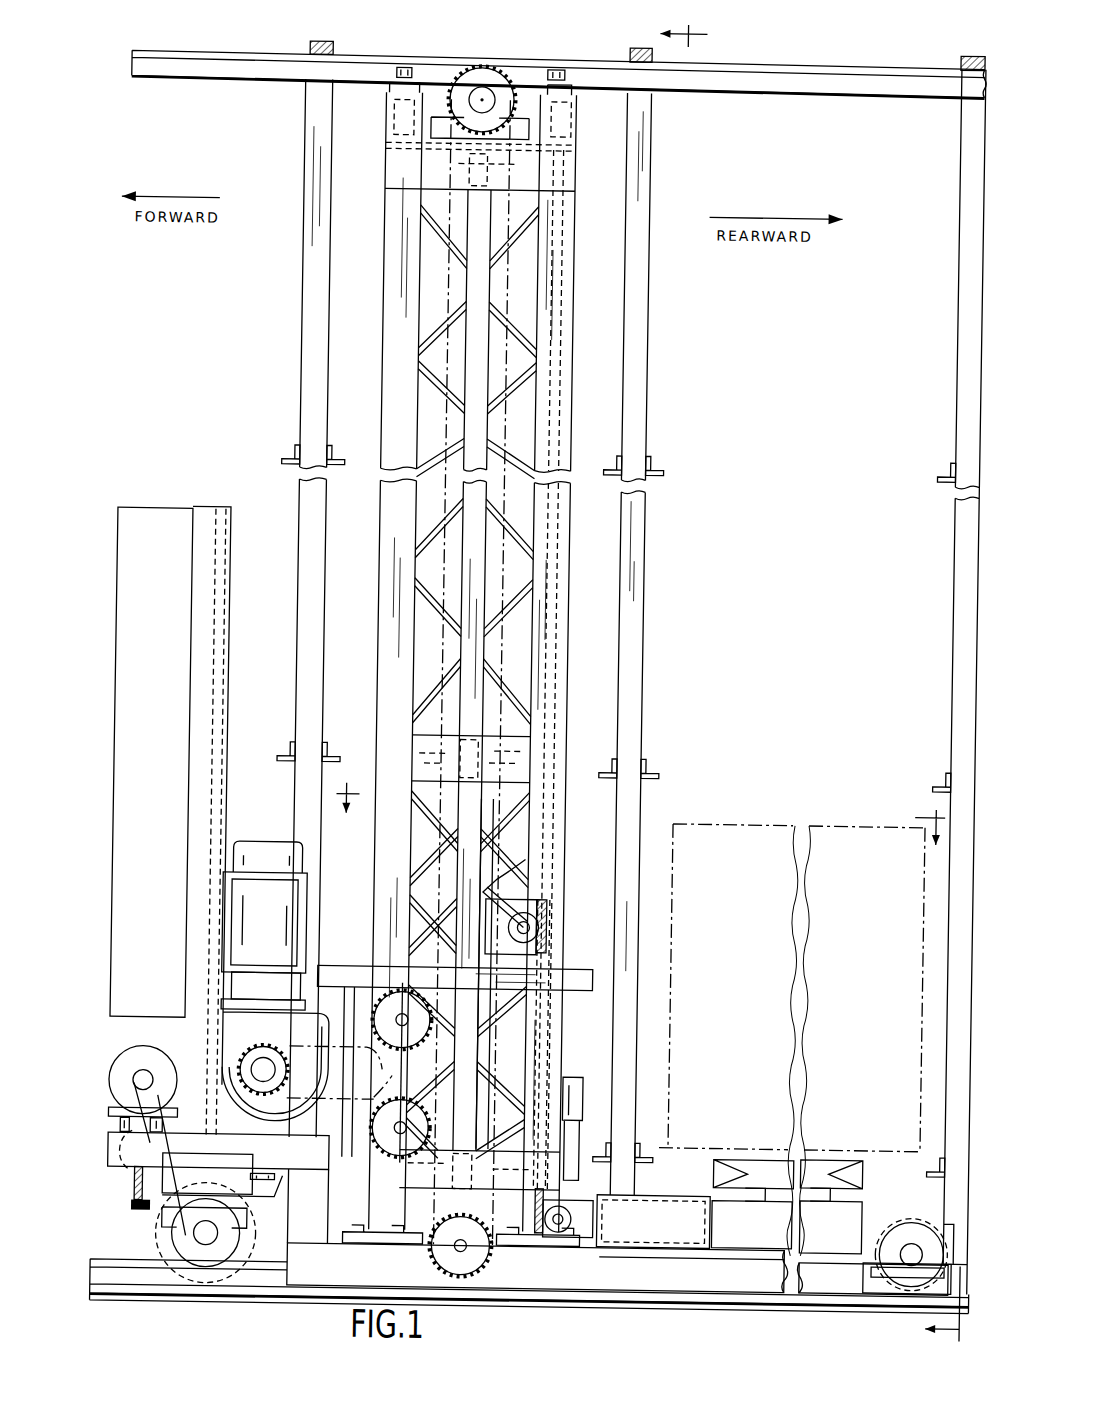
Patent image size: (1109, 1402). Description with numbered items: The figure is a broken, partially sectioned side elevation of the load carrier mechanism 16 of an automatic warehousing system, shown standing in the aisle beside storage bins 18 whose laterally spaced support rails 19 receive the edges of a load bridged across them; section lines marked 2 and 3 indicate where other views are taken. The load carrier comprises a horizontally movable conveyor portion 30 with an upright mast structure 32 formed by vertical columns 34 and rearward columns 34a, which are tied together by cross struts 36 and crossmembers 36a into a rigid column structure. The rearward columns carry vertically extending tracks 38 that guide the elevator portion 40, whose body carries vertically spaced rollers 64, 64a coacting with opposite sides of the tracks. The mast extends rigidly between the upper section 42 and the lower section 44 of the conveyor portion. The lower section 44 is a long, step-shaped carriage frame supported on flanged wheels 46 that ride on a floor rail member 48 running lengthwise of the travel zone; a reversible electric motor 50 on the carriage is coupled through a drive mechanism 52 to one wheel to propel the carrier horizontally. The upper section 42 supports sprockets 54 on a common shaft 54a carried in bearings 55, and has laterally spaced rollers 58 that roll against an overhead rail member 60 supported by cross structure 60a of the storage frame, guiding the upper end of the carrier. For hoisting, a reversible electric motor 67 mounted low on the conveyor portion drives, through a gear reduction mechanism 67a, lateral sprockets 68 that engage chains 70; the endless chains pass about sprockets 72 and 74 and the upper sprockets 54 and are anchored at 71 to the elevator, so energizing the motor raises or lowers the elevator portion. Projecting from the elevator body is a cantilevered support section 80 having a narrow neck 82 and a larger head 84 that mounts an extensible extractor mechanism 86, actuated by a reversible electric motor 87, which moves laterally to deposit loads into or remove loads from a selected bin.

The section line 2- 2 is at (801, 682).
The section line 3- 3 is at (640, 825).
The load carrier mechanism 16 is at (493, 662).
The storage bins 18 is at (308, 330).
The support rails 19 is at (290, 460).
The conveyor portion 30 is at (566, 830).
The mast structure 32 is at (567, 530).
The vertical columns 34 is at (396, 660).
The rearward columns 34a is at (568, 705).
The cross struts 36 is at (538, 400).
The crossmembers 36a is at (435, 198).
The tracks 38 is at (558, 930).
The elevator portion 40 is at (595, 1073).
The upper section 42 is at (568, 129).
The lower section 44 is at (317, 1272).
The flanged wheels 46 is at (234, 1272).
The rail member 48 is at (160, 1292).
The electric motor 50 is at (160, 1056).
The drive mechanism 52 is at (128, 1168).
The sprockets 54 is at (489, 75).
The common shaft 54a is at (469, 88).
The bearings 55 is at (430, 120).
The rollers 58 is at (394, 70).
The rail member 60 is at (804, 90).
The cross structure 60a is at (302, 43).
The rollers 64 is at (542, 1078).
The rollers 64a is at (630, 1246).
The electric motor 67 is at (262, 845).
The gear reduction mechanism 67a is at (236, 1014).
The lateral sprockets 68 is at (274, 1056).
The chains 70 is at (442, 572).
The anchor 71 is at (508, 888).
The sprockets 72 is at (393, 968).
The sprockets 74 is at (496, 1272).
The cantilevered support section 80 is at (704, 1290).
The neck 82 is at (706, 1224).
The head 84 is at (768, 1256).
The extractor mechanism 86 is at (774, 1161).
The electric motor 87 is at (587, 1132).